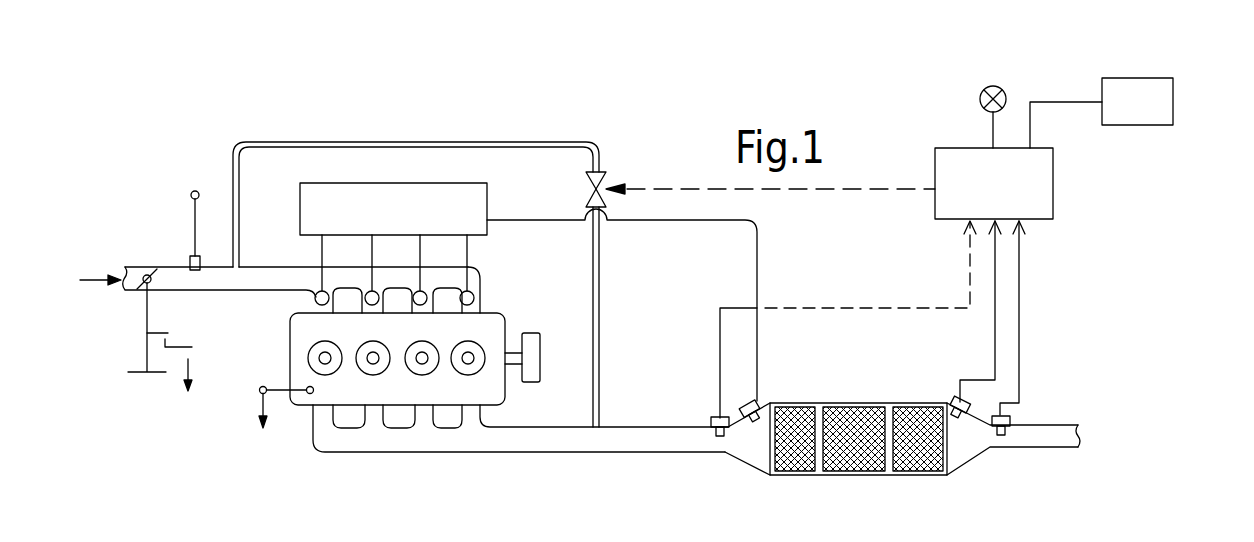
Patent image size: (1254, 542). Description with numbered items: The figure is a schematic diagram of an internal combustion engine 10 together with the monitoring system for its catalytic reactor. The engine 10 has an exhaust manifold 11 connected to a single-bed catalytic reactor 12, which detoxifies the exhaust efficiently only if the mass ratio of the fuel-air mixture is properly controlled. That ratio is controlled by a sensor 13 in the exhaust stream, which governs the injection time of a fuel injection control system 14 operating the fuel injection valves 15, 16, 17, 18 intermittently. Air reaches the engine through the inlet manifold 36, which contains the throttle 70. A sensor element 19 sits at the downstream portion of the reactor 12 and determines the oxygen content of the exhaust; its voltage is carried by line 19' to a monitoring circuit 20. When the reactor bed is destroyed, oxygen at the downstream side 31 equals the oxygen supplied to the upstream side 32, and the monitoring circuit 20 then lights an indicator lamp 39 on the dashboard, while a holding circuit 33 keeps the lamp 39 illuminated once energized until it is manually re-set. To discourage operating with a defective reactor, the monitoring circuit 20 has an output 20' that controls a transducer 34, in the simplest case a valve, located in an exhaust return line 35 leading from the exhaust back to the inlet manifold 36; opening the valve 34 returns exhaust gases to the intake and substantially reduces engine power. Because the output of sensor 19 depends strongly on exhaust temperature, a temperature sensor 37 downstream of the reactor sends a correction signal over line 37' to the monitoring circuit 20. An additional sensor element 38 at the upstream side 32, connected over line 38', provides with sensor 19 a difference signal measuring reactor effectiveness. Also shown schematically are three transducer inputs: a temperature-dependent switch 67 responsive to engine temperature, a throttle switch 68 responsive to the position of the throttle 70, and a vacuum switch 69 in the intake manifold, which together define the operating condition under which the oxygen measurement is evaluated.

The internal combustion engine 10 is at (503, 318).
The exhaust manifold 11 is at (518, 452).
The single-bed catalytic reactor 12 is at (808, 403).
The sensor 13 is at (760, 398).
The fuel injection control system 14 is at (488, 199).
The fuel injection valve 15 is at (315, 300).
The fuel injection valve 16 is at (369, 291).
The fuel injection valve 17 is at (418, 291).
The fuel injection valve 18 is at (465, 291).
The sensor element 19 is at (944, 388).
The line 19' is at (973, 311).
The monitoring circuit 20 is at (1023, 183).
The output 20' is at (770, 204).
The downstream side 31 is at (974, 450).
The upstream side 32 is at (752, 444).
The holding circuit 33 is at (1172, 95).
The transducer 34 is at (607, 174).
The exhaust return line 35 is at (487, 142).
The inlet manifold 36 is at (168, 273).
The temperature sensor 37 is at (1033, 414).
The line 37' is at (1034, 318).
The additional sensor element 38 is at (718, 372).
The line 38' is at (870, 264).
The indicator lamp 39 is at (1003, 92).
The temperature-dependent switch 67 is at (307, 395).
The throttle switch 68 is at (175, 338).
The vacuum switch 69 is at (201, 264).
The throttle 70 is at (154, 273).